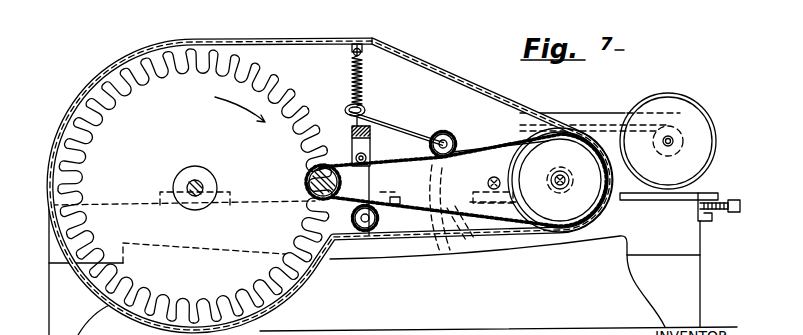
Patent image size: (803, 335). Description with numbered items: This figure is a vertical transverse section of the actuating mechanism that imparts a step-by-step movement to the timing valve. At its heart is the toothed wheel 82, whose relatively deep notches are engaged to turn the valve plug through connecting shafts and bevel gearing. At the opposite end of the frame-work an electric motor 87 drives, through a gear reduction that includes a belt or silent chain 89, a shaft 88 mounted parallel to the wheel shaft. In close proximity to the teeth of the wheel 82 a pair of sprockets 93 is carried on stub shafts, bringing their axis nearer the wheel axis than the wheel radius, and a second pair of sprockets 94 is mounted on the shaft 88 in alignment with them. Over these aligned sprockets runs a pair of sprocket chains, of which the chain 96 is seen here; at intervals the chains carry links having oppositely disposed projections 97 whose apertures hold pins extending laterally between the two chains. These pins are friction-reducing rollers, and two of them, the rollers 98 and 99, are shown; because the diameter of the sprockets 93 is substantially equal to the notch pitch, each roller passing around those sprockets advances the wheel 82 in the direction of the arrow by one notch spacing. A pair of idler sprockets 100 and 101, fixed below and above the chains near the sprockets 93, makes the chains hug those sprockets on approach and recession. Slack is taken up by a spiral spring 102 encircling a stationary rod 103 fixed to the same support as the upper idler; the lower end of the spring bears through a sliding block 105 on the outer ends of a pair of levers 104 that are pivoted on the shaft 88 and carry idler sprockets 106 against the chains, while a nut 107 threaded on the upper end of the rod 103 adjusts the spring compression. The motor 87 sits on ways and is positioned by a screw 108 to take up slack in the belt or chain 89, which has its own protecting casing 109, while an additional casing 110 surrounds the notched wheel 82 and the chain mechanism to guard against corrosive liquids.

The toothed wheel 82 is at (153, 130).
The electric motor 87 is at (702, 128).
The shaft 88 is at (560, 188).
The belt or silent chain 89 is at (598, 123).
The sprockets 93 is at (341, 107).
The sprockets 94 is at (583, 222).
The sprocket chain 96 is at (432, 225).
The projections 97 is at (453, 205).
The actuating pin or roller 98 is at (312, 165).
The actuating pin or roller 99 is at (410, 188).
The idler sprocket 100 is at (365, 228).
The idler sprocket 101 is at (372, 155).
The spiral spring 102 is at (360, 62).
The rod 103 is at (362, 93).
The levers 104 is at (437, 134).
The block 105 is at (370, 115).
The idler sprockets 106 is at (455, 148).
The nut 107 is at (362, 47).
The screw 108 is at (727, 212).
The protecting casing 109 is at (627, 110).
The casing 110 is at (280, 305).